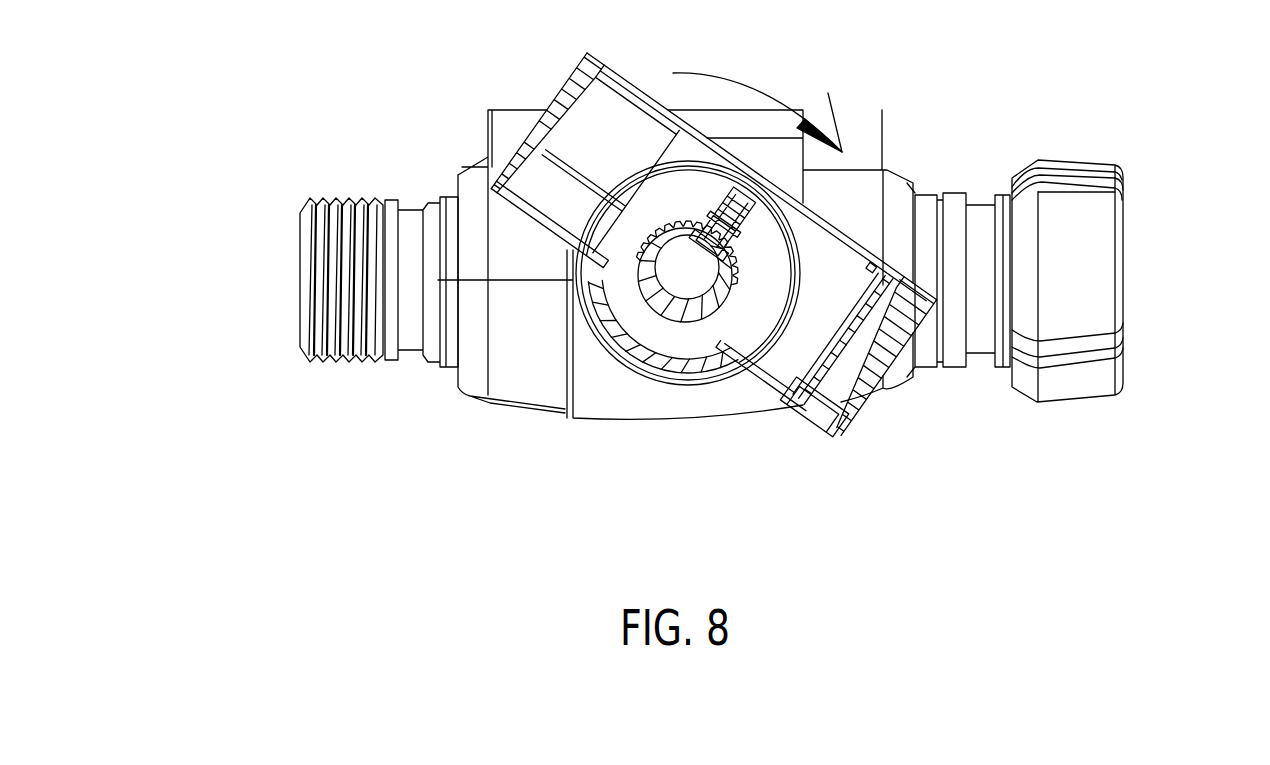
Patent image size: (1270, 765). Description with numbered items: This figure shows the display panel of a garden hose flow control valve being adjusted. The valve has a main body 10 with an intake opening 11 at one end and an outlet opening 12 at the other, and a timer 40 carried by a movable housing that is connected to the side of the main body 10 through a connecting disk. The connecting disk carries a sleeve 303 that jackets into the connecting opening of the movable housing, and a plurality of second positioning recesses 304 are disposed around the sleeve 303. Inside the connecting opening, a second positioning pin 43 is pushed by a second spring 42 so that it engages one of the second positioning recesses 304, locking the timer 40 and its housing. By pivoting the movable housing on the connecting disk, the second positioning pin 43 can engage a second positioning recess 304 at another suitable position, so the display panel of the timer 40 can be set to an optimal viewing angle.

The main body 10 is at (459, 391).
The intake opening 11 is at (1125, 268).
The outlet opening 12 is at (298, 283).
The timer 40 is at (857, 414).
The second spring 42 is at (777, 197).
The second positioning pin 43 is at (708, 218).
The sleeve 303 is at (722, 285).
The second positioning recesses 304 is at (665, 239).